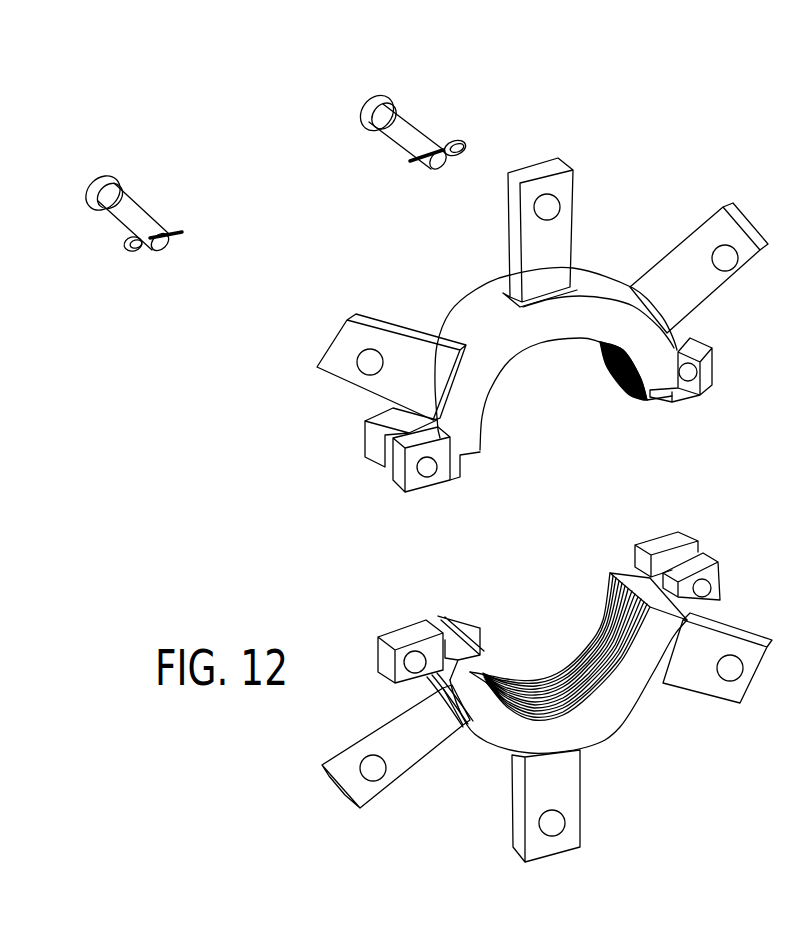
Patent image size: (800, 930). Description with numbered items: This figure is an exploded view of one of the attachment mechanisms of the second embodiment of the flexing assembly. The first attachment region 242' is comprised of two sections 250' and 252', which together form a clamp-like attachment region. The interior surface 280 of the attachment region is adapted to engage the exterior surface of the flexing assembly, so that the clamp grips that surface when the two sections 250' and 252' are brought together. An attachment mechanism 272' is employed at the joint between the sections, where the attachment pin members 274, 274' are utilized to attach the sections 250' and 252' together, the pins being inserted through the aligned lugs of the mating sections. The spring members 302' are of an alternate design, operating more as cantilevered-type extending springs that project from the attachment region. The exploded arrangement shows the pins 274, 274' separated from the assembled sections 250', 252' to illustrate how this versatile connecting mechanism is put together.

The first attachment region 242' is at (518, 325).
The section 250' is at (566, 325).
The section 252' is at (547, 697).
The attachment mechanism 272' is at (708, 388).
The clevis pin 274 is at (134, 187).
The attachment pin member 274' is at (411, 109).
The interior surface 280 is at (565, 676).
The spring member 302' is at (367, 367).